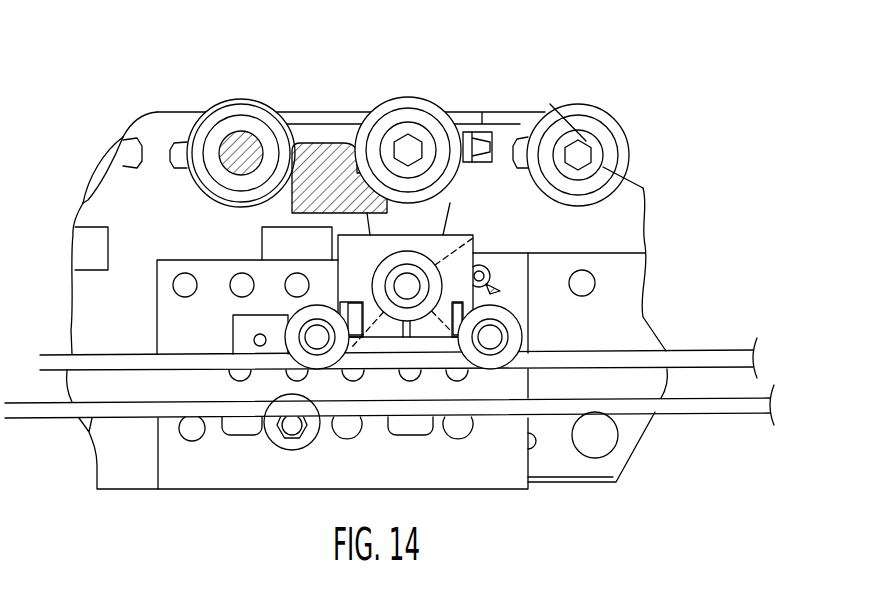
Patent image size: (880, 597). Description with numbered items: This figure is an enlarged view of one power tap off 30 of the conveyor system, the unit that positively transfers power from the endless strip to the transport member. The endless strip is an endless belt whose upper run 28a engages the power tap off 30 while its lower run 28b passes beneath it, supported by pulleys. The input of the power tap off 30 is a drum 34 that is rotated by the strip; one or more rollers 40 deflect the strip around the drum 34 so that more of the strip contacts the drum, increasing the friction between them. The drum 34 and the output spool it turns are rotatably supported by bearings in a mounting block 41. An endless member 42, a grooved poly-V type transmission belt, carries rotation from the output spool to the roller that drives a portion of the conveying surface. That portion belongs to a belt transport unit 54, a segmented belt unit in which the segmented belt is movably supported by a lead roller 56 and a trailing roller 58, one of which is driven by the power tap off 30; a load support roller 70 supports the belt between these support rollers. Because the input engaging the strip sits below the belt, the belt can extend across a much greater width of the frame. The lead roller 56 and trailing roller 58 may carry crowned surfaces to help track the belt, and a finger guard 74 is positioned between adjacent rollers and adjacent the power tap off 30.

The upper run 28a is at (688, 350).
The lower run 28b is at (693, 413).
The power tap off 30 is at (495, 288).
The drum 34 is at (473, 243).
The rollers 40 is at (294, 314).
The mounting block 41 is at (475, 258).
The endless member 42 is at (447, 212).
The belt transport unit 54 is at (118, 126).
The lead roller 56 is at (408, 97).
The trailing roller 58 is at (550, 104).
The load support roller 70 is at (213, 104).
The finger guard 74 is at (312, 147).